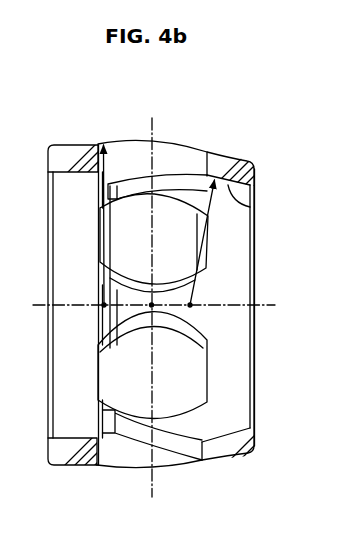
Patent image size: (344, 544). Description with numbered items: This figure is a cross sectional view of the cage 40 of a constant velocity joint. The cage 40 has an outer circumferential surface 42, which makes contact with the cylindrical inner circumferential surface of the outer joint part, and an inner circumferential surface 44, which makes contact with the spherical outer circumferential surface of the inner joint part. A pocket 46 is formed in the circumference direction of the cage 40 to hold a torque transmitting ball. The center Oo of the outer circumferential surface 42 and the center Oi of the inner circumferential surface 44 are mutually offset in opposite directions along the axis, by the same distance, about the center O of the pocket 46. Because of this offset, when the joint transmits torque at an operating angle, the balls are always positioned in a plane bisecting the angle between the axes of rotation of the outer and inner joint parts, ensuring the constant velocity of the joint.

The cage 40 is at (240, 142).
The outer circumferential surface 42 is at (83, 143).
The inner circumferential surface 44 is at (255, 208).
The pocket 46 is at (178, 152).
The center of the pocket O is at (152, 303).
The center of the outer circumferential surface Oo is at (100, 316).
The center of the inner circumferential surface Oi is at (202, 244).